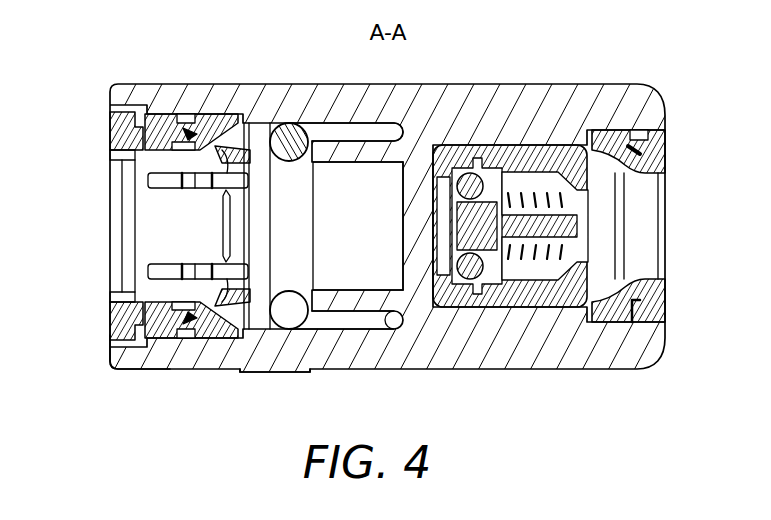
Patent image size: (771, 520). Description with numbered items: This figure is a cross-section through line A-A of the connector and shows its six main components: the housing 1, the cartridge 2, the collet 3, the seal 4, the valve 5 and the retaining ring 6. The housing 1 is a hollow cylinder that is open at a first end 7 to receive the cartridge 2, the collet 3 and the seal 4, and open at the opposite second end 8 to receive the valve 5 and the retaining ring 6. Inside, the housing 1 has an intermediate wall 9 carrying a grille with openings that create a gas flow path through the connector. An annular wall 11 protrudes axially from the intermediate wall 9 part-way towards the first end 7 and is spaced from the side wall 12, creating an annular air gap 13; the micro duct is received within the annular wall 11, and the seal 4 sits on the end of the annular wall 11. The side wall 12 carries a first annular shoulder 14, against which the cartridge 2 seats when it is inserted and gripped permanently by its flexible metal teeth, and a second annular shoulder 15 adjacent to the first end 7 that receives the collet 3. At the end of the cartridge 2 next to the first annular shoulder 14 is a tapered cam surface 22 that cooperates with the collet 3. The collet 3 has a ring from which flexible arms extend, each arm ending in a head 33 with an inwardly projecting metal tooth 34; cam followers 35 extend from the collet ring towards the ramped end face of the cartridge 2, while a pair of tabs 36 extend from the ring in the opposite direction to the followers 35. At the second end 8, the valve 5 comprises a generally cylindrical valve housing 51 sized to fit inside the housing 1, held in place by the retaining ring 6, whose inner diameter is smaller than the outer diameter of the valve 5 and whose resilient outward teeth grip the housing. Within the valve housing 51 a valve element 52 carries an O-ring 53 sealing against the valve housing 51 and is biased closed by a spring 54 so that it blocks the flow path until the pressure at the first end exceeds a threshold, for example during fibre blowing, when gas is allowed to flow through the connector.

The housing 1 is at (470, 102).
The cartridge 2 is at (213, 114).
The collet 3 is at (117, 126).
The seal 4 is at (297, 124).
The valve 5 is at (560, 145).
The retaining ring 6 is at (655, 151).
The first end 7 is at (100, 370).
The second end 8 is at (671, 97).
The intermediate wall 9 is at (418, 185).
The annular wall 11 is at (365, 300).
The side wall 12 is at (284, 350).
The annular air gap 13 is at (338, 133).
The first annular shoulder 14 is at (245, 120).
The second annular shoulder 15 is at (148, 346).
The tapered cam surface 22 is at (217, 332).
The head 33 is at (145, 245).
The metal tooth 34 is at (222, 220).
The cam followers 35 is at (147, 133).
The tabs 36 is at (110, 260).
The valve housing 51 is at (518, 145).
The valve element 52 is at (503, 264).
The O-ring 53 is at (473, 277).
The spring 54 is at (548, 258).